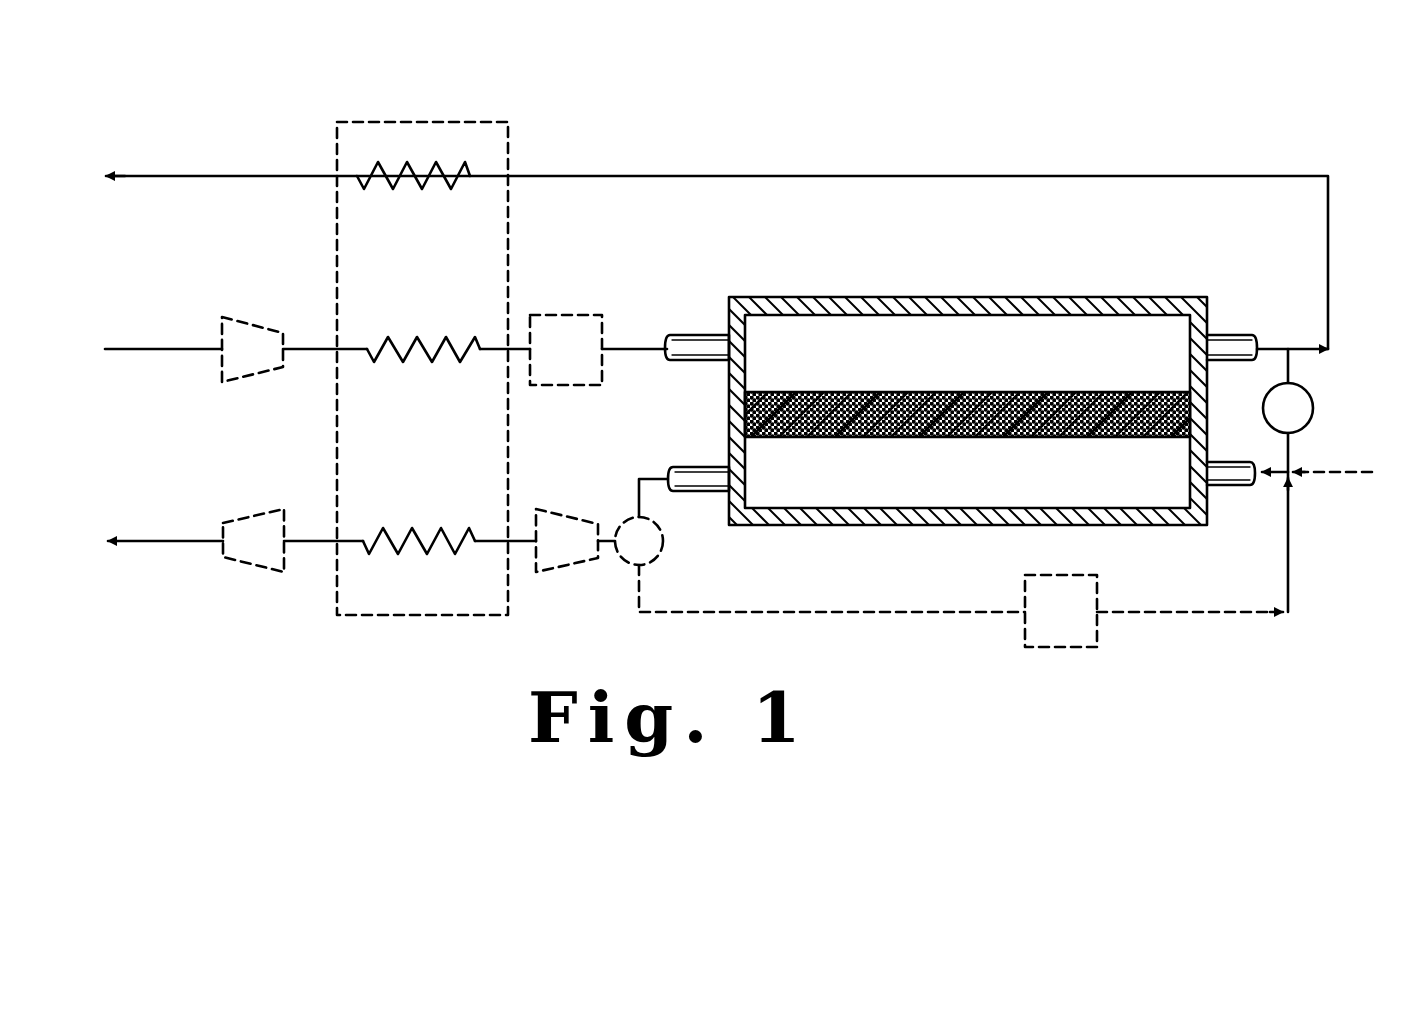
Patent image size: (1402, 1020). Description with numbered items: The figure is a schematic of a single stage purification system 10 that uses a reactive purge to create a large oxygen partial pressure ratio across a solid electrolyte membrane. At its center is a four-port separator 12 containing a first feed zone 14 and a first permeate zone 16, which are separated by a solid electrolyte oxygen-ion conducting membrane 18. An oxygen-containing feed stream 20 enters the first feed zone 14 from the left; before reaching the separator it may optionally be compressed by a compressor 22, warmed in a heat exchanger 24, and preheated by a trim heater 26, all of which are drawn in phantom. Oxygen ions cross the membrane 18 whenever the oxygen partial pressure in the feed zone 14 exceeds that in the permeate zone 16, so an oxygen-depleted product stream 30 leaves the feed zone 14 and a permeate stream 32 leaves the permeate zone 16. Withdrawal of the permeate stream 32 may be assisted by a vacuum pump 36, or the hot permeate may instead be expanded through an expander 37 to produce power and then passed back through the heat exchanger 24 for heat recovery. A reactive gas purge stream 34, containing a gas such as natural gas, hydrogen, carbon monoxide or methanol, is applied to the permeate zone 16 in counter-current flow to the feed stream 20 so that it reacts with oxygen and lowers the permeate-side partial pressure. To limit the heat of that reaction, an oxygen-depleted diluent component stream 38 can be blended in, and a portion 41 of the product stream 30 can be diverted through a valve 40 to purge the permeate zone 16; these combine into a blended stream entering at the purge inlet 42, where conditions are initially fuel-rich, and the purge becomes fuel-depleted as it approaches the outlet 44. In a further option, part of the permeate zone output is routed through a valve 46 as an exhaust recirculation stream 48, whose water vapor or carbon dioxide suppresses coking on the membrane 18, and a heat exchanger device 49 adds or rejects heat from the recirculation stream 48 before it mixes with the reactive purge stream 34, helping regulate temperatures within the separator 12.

The purification system 10 is at (1034, 100).
The four-port separator 12 is at (982, 286).
The first feed zone 14 is at (834, 328).
The first permeate zone 16 is at (842, 482).
The solid electrolyte oxygen-ion conducting membrane 18 is at (1048, 417).
The oxygen-containing feed stream 20 is at (642, 346).
The compressor 22 is at (262, 325).
The heat exchanger 24 is at (482, 122).
The trim heater 26 is at (572, 315).
The oxygen-depleted product stream 30 is at (1173, 175).
The permeate stream 32 is at (610, 545).
The reactive gas purge stream 34 is at (1290, 570).
The vacuum pump 36 is at (255, 570).
The expander 37 is at (570, 510).
The oxygen-depleted diluent component stream 38 is at (1340, 476).
The valve 40 is at (1306, 398).
The portion of product stream 41 is at (1292, 457).
The purge inlet 42 is at (1223, 487).
The outlet 44 is at (703, 493).
The valve 46 is at (663, 555).
The exhaust recirculation stream 48 is at (875, 613).
The heat exchanger device 49 is at (1062, 648).